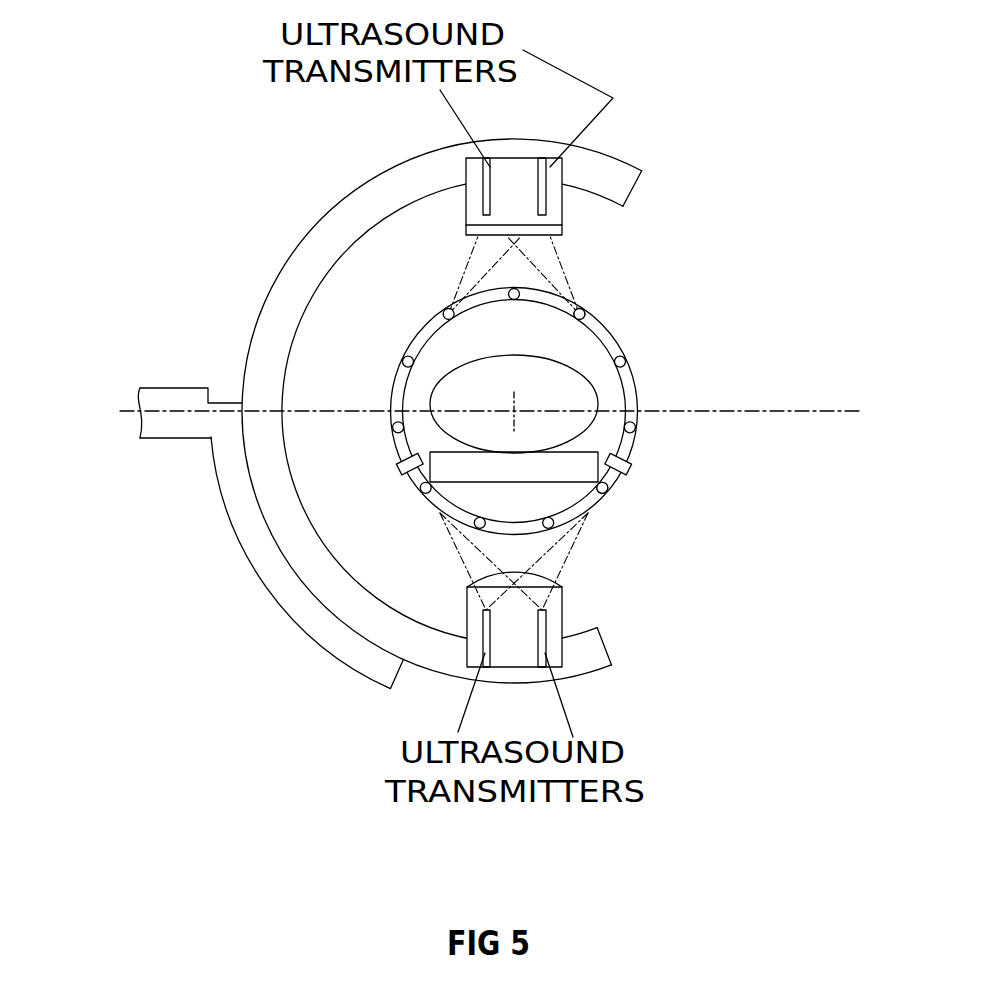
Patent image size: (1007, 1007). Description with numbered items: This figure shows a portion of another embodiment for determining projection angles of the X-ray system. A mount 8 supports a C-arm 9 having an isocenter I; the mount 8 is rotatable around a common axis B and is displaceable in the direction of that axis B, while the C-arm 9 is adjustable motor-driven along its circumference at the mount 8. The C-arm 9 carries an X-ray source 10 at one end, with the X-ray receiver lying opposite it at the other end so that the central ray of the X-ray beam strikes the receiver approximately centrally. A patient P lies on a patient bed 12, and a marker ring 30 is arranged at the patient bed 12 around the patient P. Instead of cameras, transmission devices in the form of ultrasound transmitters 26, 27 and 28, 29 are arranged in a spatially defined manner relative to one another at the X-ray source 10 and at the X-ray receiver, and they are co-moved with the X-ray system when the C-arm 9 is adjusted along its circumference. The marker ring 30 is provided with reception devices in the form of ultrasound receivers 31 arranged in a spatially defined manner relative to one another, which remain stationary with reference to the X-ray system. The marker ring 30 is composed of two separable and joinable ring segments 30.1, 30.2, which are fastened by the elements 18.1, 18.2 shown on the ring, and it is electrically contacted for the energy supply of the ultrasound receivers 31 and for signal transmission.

The mount 8 is at (171, 405).
The C-arm 9 is at (347, 223).
The X-ray source 10 is at (514, 175).
The patient bed 12 is at (548, 468).
The fastening element 18.1 is at (628, 466).
The fastening element 18.2 is at (400, 470).
The ultrasound transmitter 26 is at (482, 608).
The ultrasound transmitter 27 is at (547, 610).
The ultrasound transmitter 28 is at (480, 200).
The ultrasound transmitter 29 is at (545, 200).
The marker ring 30 is at (637, 385).
The ring segment 30.1 is at (592, 506).
The ring segment 30.2 is at (596, 323).
The ultrasound receivers 31 is at (150, 588).
The patient P is at (514, 355).
The isocenter I is at (516, 409).
The axis B is at (776, 411).